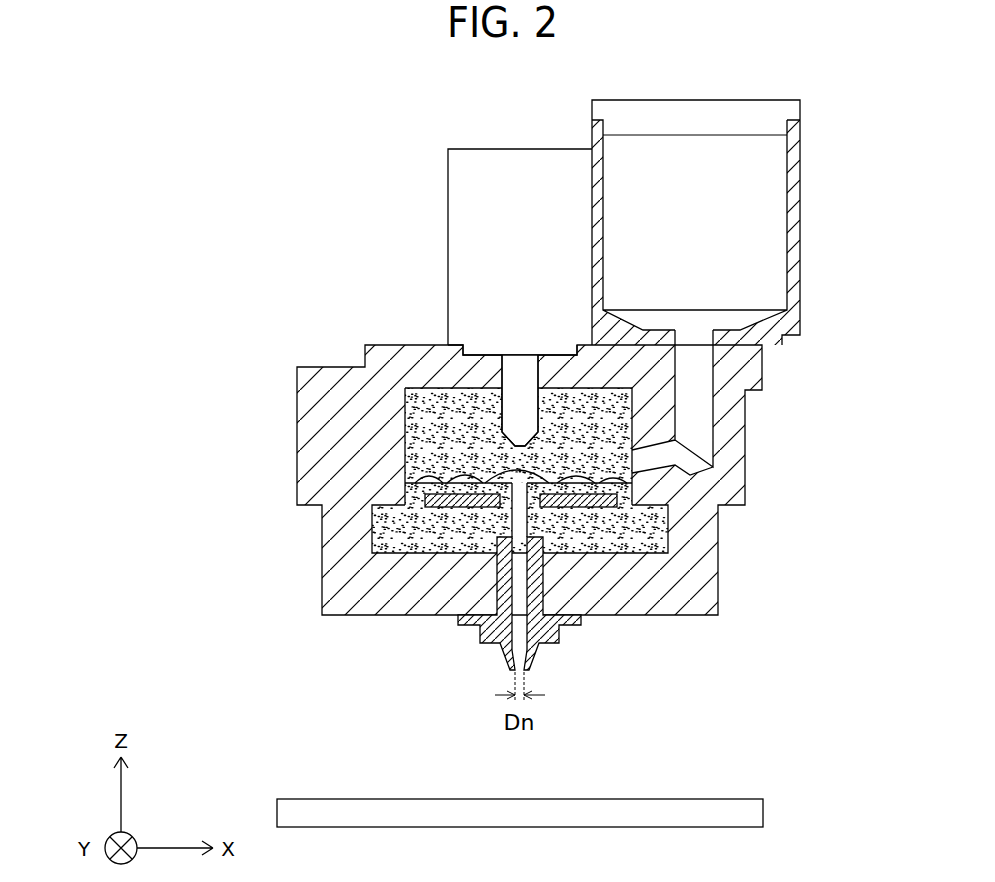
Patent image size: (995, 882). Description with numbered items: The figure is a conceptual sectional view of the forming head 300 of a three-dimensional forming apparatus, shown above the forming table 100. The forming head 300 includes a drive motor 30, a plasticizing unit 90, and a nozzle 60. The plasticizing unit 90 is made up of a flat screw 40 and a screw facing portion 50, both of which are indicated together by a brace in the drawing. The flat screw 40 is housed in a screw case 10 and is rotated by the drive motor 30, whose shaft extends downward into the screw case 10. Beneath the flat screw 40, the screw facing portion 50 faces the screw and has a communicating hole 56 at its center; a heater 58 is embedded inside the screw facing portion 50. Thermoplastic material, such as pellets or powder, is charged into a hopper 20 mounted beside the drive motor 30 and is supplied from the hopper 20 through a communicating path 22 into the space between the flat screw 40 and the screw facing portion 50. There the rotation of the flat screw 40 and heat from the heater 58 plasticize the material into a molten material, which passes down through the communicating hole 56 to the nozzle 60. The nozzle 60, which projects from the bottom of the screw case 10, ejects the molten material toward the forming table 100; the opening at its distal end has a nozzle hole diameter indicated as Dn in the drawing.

The screw case 10 is at (321, 367).
The hopper 20 is at (800, 213).
The communicating path 22 is at (693, 409).
The drive motor 30 is at (448, 181).
The flat screw 40 is at (623, 445).
The screw facing portion 50 is at (627, 533).
The communicating hole 56 is at (522, 518).
The heater 58 is at (426, 505).
The nozzle 60 is at (503, 655).
The plasticizing unit 90 is at (638, 454).
The forming table 100 is at (703, 798).
The forming head 300 is at (758, 287).